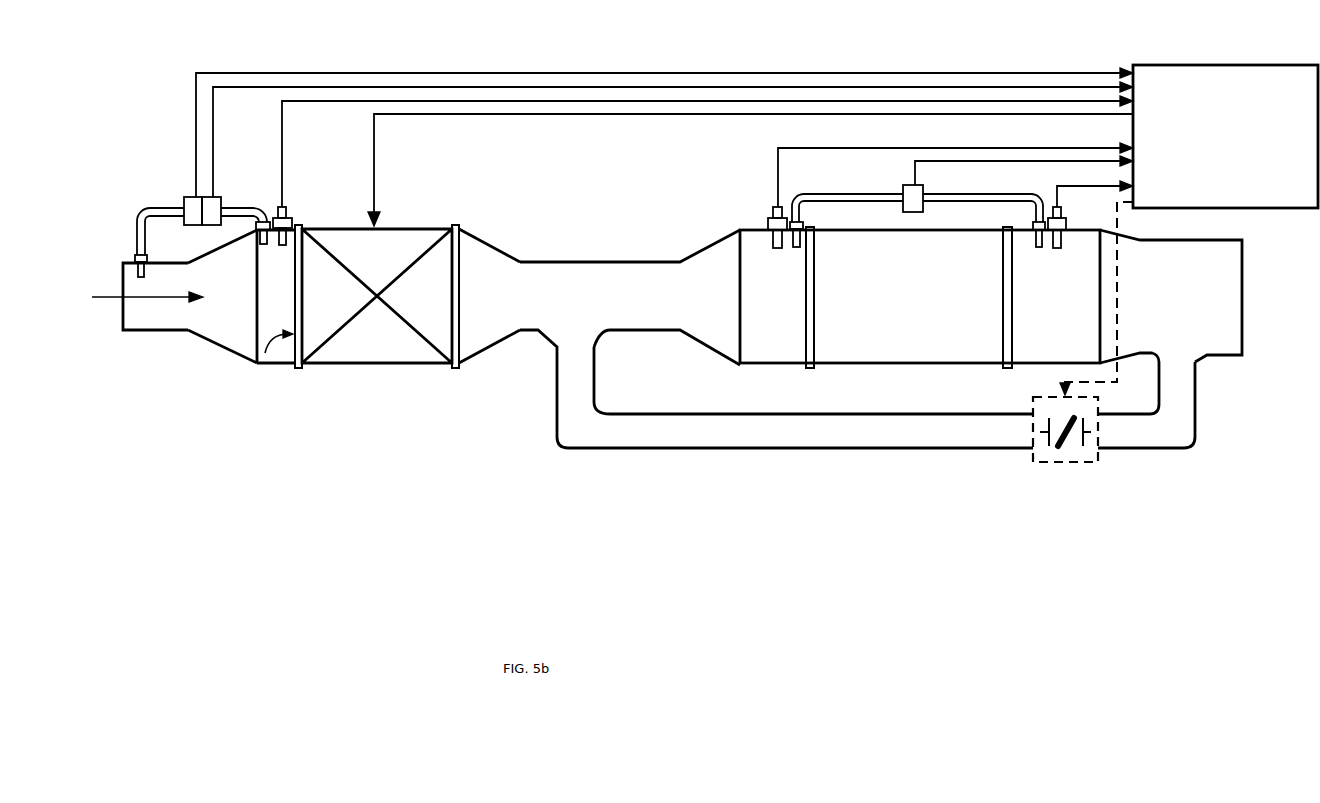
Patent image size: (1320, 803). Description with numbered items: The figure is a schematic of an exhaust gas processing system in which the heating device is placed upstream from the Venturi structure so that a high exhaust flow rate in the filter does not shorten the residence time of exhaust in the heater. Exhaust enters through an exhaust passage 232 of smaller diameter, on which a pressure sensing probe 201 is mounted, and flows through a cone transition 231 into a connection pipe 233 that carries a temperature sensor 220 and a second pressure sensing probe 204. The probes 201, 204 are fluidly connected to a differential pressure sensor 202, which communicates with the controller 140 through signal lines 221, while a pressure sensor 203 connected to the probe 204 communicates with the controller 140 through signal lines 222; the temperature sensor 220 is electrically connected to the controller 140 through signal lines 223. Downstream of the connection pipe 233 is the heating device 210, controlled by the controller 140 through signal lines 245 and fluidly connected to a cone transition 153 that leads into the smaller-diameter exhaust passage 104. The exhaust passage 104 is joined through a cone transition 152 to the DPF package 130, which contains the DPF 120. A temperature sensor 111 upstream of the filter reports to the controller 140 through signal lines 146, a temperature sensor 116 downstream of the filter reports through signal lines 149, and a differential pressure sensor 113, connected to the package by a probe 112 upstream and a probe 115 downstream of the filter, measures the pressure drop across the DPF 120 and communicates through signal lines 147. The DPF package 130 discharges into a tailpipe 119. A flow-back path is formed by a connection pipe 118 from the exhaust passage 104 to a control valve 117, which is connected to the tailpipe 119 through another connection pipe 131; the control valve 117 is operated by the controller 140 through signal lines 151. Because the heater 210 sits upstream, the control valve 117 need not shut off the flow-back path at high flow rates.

The exhaust passage 104 is at (580, 262).
The temperature sensor 111 is at (773, 207).
The probe 112 is at (813, 198).
The differential pressure sensor 113 is at (903, 210).
The probe 115 is at (988, 196).
The temperature sensor 116 is at (1066, 220).
The control valve 117 is at (1033, 404).
The connection pipe 118 is at (932, 413).
The tailpipe 119 is at (1240, 310).
The DPF 120 is at (1012, 300).
The DPF package 130 is at (793, 364).
The connection pipe 131 is at (1197, 397).
The controller 140 is at (1182, 65).
The signal lines 146 is at (779, 172).
The signal lines 147 is at (913, 170).
The signal lines 149 is at (1075, 184).
The signal lines 151 is at (1117, 282).
The cone transition 152 is at (687, 337).
The cone transition 153 is at (483, 240).
The pressure sensing probe 201 is at (170, 208).
The differential pressure sensor 202 is at (196, 227).
The pressure sensor 203 is at (221, 197).
The pressure sensing probe 204 is at (253, 223).
The heating device 210 is at (262, 357).
The temperature sensor 220 is at (288, 207).
The signal lines 221 is at (195, 92).
The signal lines 222 is at (280, 88).
The signal lines 223 is at (282, 134).
The cone transition 231 is at (213, 347).
The exhaust passage 232 is at (158, 332).
The connection pipe 233 is at (282, 364).
The signal lines 245 is at (508, 114).